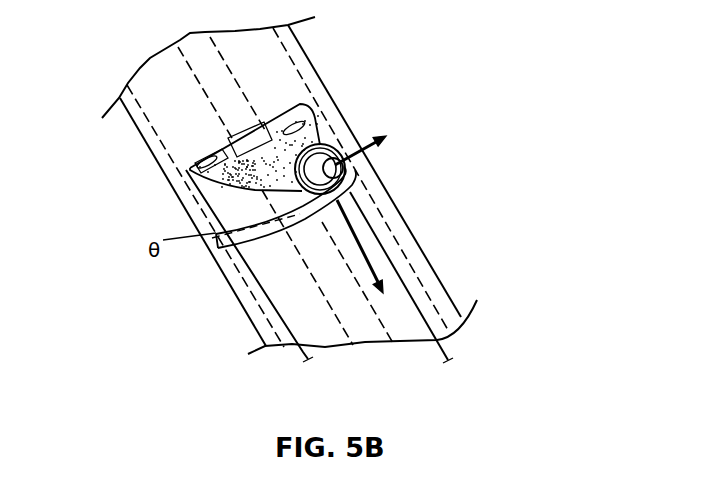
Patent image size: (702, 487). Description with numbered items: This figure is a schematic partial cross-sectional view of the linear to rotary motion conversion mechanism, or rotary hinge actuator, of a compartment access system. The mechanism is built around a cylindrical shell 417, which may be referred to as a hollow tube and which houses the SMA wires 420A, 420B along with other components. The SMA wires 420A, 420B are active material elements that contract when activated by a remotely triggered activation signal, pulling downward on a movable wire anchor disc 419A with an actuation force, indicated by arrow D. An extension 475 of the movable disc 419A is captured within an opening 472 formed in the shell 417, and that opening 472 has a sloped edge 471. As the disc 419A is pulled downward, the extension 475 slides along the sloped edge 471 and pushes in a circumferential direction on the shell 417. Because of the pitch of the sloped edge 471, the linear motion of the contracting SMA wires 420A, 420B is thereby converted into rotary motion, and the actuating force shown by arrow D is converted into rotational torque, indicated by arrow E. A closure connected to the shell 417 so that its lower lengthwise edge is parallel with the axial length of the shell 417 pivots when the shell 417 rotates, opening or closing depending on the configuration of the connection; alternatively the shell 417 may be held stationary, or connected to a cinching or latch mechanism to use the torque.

The cylindrical shell 417 is at (397, 210).
The movable wire anchor disc 419A is at (312, 104).
The SMA wire 420A is at (282, 309).
The SMA wire 420B is at (393, 270).
The sloped edge 471 is at (192, 210).
The opening 472 is at (190, 172).
The extension 475 is at (338, 148).
The arrow indicating actuating force D is at (362, 254).
The arrow indicating rotational torque E is at (372, 150).